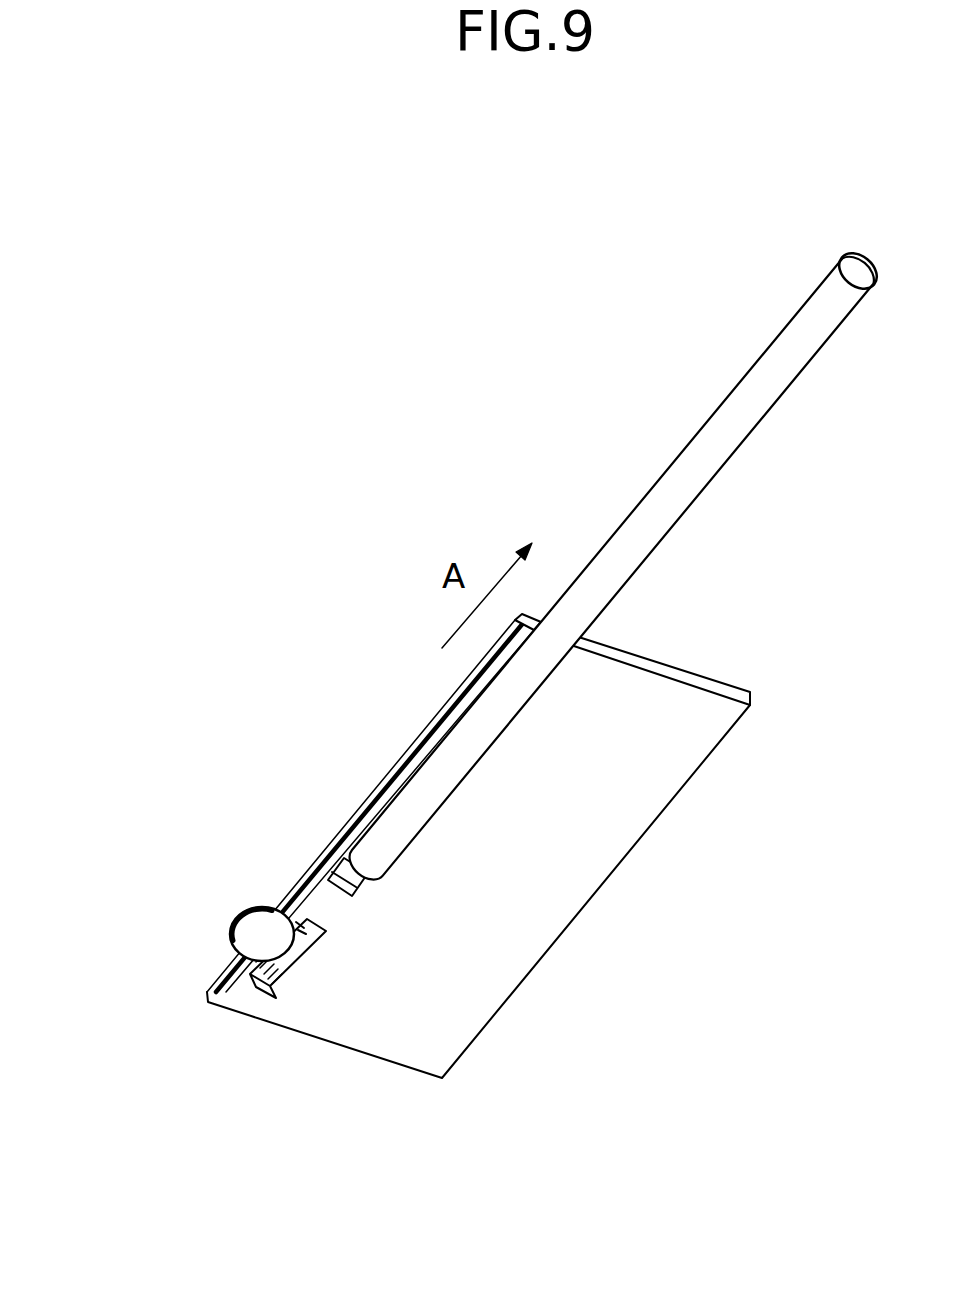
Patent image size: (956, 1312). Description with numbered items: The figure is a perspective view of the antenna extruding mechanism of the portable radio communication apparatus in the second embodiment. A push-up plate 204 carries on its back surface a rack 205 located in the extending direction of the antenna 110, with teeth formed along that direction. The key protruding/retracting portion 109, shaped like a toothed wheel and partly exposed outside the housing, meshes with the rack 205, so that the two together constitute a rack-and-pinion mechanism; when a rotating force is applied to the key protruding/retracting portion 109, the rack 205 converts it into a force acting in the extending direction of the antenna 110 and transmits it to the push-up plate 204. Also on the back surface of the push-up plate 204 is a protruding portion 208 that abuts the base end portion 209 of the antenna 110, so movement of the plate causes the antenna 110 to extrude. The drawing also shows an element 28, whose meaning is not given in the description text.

The antenna 110 is at (697, 432).
The push-up plate 204 is at (592, 843).
The rack 205 is at (300, 973).
The protruding portion 208 is at (335, 862).
The base end portion 209 is at (375, 873).
The ball 28 is at (252, 906).
The key protruding/retracting portion 109 is at (228, 915).